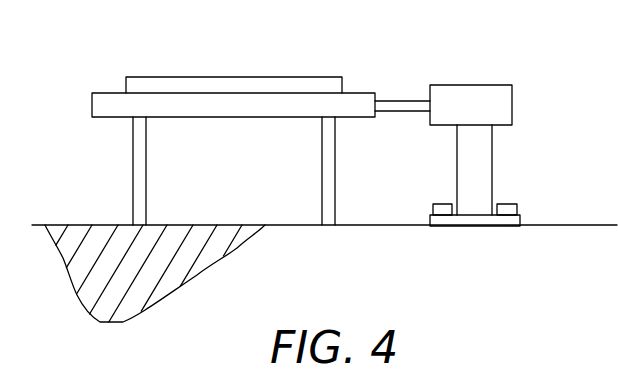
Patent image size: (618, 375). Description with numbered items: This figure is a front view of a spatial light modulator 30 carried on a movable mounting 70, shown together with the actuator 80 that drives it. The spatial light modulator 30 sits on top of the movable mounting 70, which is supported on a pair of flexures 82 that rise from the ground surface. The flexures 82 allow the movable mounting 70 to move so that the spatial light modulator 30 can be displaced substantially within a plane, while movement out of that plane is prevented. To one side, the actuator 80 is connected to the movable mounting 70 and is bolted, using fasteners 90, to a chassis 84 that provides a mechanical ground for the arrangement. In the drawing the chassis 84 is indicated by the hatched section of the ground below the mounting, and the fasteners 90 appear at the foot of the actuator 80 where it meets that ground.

The movable mounting 70 is at (108, 93).
The spatial light modulator 30 is at (219, 77).
The flexures 82 is at (322, 159).
The actuator 80 is at (482, 85).
The fasteners 90 is at (500, 204).
The chassis 84 is at (78, 224).